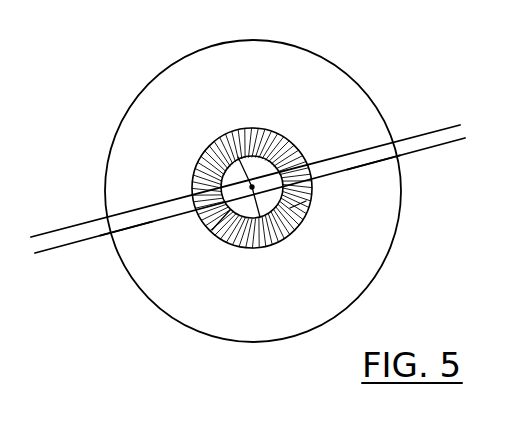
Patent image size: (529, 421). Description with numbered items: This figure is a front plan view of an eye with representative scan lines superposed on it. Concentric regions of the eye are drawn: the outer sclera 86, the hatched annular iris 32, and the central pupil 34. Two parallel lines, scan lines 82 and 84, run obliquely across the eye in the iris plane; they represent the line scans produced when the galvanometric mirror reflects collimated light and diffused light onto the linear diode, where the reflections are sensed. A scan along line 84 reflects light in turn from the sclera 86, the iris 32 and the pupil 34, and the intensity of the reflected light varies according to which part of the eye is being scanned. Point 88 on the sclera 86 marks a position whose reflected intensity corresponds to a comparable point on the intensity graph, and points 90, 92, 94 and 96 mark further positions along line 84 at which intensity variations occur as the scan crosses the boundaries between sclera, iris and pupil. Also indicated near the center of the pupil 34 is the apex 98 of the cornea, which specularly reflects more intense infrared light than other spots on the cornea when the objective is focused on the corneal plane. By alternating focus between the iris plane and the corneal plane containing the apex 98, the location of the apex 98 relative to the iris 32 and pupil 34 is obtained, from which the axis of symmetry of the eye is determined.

The iris 32 is at (252, 133).
The pupil 34 is at (259, 162).
The scan line 82 is at (440, 126).
The scan line 84 is at (447, 144).
The sclera 86 is at (253, 53).
The point on sclera 88 is at (152, 224).
The point 90 is at (213, 229).
The point 92 is at (268, 247).
The point 94 is at (290, 208).
The point 96 is at (347, 170).
The apex of cornea 98 is at (213, 141).